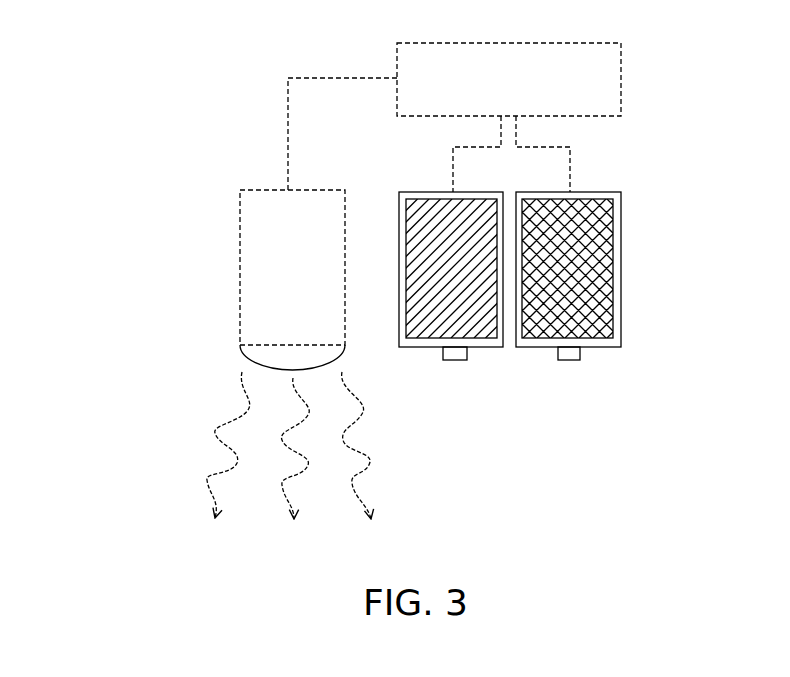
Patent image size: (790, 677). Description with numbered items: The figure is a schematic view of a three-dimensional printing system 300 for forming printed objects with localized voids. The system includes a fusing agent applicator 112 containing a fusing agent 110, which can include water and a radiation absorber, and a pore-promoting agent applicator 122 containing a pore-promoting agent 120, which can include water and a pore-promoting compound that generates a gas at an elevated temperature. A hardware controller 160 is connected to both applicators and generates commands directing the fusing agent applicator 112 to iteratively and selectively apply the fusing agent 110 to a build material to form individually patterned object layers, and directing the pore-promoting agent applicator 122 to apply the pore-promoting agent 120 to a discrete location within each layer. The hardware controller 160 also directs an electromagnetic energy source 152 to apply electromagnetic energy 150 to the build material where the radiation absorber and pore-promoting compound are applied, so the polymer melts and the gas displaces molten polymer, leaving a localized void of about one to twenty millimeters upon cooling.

The three-dimensional printing system 300 is at (227, 25).
The hardware controller 160 is at (454, 117).
The electromagnetic energy source 152 is at (292, 280).
The electromagnetic energy 150 is at (203, 432).
The fusing agent 110 is at (482, 320).
The fusing agent applicator 112 is at (428, 363).
The pore-promoting agent 120 is at (595, 323).
The pore-promoting agent applicator 122 is at (545, 363).